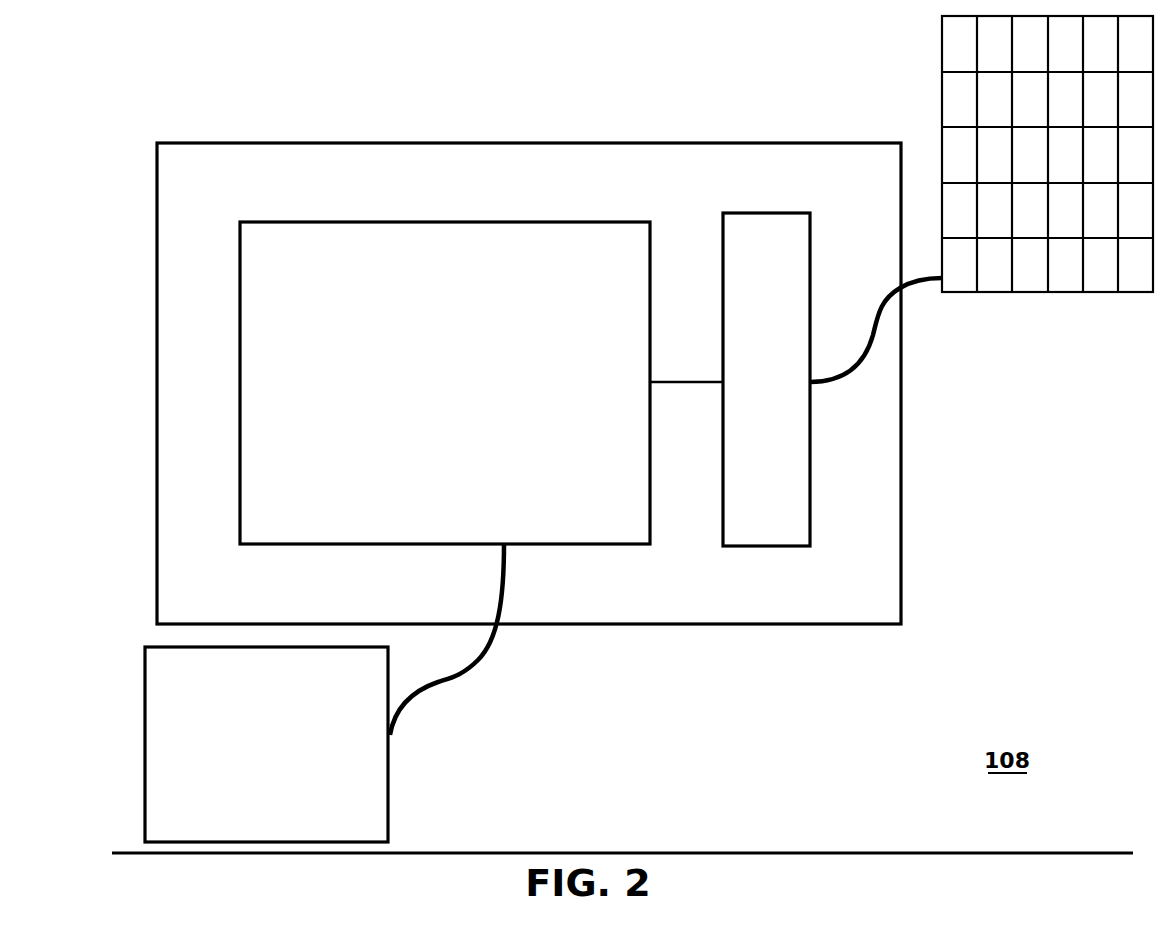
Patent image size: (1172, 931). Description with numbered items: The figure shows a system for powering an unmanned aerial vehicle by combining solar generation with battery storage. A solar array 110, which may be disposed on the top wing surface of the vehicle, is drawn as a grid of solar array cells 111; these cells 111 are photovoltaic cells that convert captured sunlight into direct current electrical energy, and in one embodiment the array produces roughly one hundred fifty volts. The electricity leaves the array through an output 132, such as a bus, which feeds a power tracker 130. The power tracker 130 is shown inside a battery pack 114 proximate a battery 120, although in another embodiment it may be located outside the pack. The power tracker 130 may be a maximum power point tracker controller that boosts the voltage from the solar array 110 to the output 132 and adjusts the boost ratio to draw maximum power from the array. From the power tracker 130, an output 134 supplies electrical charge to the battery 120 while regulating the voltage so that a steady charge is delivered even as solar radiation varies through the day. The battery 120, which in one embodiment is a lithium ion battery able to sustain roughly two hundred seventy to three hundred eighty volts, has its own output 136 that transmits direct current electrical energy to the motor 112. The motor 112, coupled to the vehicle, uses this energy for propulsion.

The solar array 110 is at (1068, 292).
The solar array cells 111 is at (952, 98).
The motor 112 is at (388, 778).
The battery pack 114 is at (178, 110).
The battery 120 is at (240, 360).
The power tracker 130 is at (765, 546).
The output of the solar array 132 is at (930, 283).
The output of the power tracker 134 is at (668, 384).
The output of the battery 136 is at (483, 635).